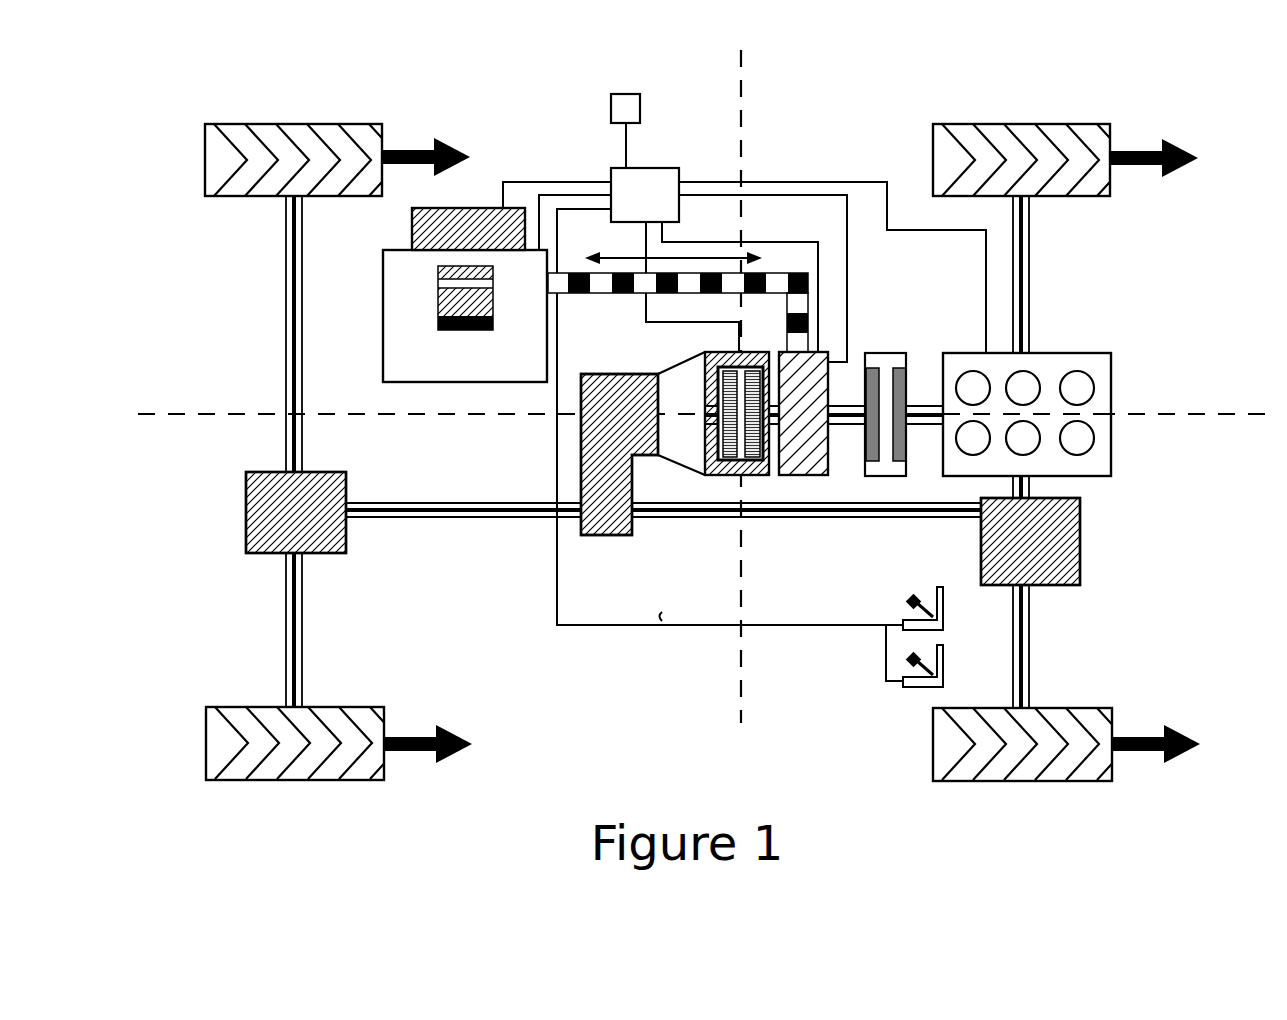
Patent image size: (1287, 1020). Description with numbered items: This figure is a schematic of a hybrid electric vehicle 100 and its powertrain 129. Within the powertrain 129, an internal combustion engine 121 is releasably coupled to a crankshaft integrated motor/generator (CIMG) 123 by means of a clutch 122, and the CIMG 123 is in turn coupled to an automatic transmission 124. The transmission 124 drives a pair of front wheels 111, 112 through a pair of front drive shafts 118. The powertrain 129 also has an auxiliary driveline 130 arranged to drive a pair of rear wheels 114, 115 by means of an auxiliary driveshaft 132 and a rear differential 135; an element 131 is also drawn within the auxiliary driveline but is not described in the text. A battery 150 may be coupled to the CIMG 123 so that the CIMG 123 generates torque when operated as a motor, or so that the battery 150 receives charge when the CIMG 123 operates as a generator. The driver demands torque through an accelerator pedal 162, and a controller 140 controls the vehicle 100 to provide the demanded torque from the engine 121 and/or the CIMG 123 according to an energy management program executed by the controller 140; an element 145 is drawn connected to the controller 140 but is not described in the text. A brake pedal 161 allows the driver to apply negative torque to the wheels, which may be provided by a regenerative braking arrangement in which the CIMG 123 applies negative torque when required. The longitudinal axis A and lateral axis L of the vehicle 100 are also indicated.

The hybrid electric vehicle 100 is at (1197, 230).
The front wheel 111 is at (1090, 132).
The front wheel 112 is at (1100, 780).
The rear wheel 114 is at (355, 130).
The rear wheel 115 is at (242, 768).
The front drive shafts 118 is at (1030, 259).
The internal combustion engine 121 is at (1097, 378).
The clutch 122 is at (888, 357).
The crankshaft integrated motor/generator (CIMG) 123 is at (805, 470).
The automatic transmission 124 is at (723, 468).
The powertrain 129 is at (1158, 506).
The auxiliary driveline 130 is at (492, 632).
The electric rear drive motor 131 is at (590, 443).
The auxiliary driveshaft 132 is at (423, 515).
The rear differential 135 is at (257, 507).
The controller 140 is at (668, 167).
The user input / selector 145 is at (611, 105).
The battery 150 is at (383, 318).
The brake pedal 161 is at (910, 601).
The accelerator pedal 162 is at (910, 659).